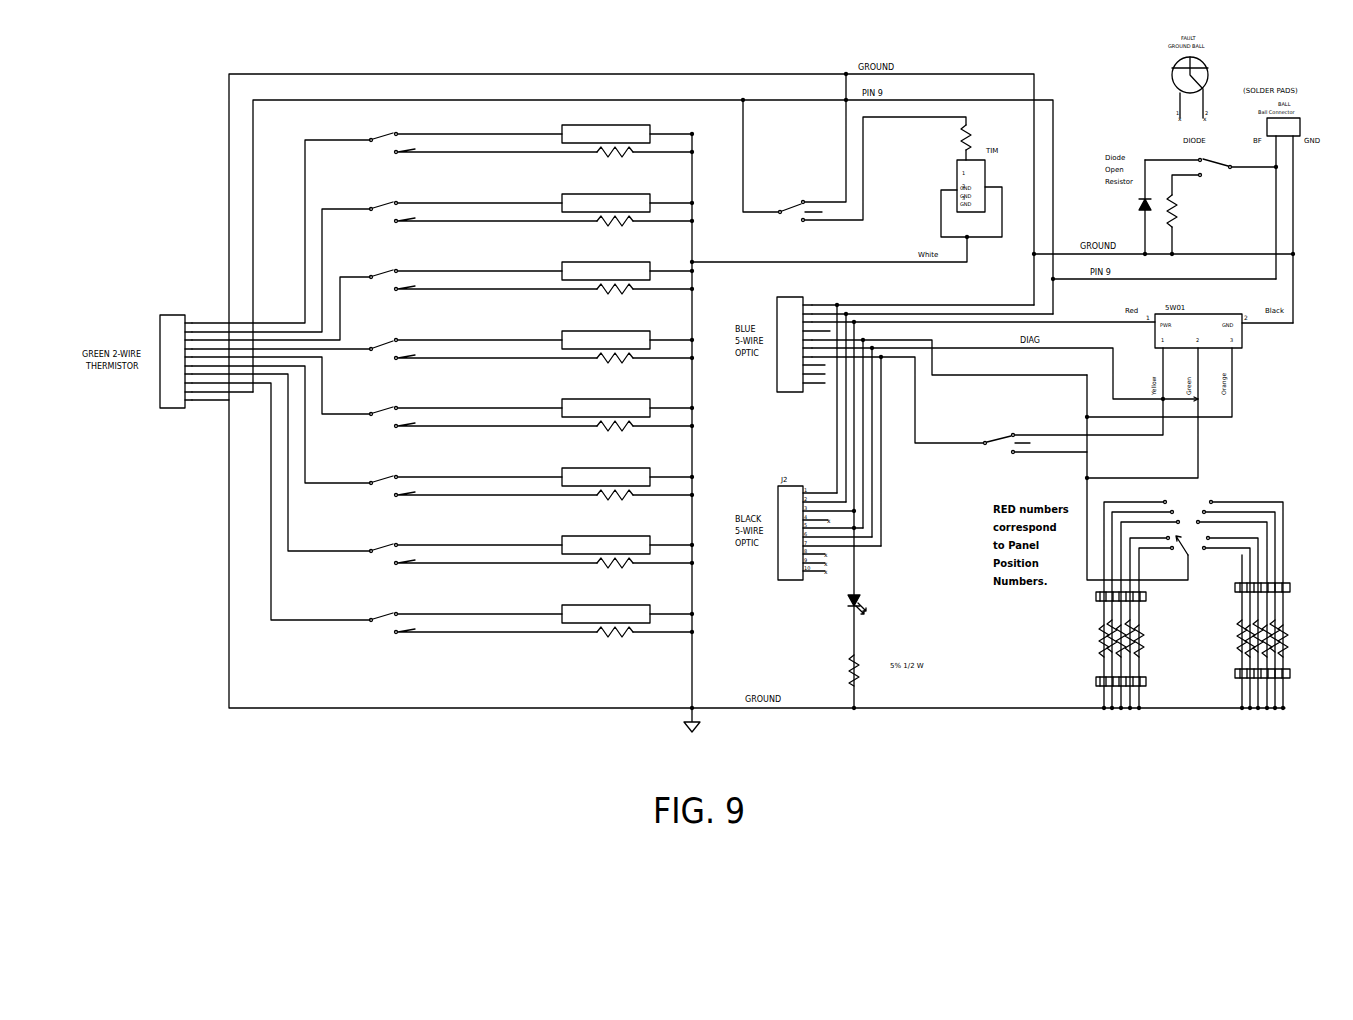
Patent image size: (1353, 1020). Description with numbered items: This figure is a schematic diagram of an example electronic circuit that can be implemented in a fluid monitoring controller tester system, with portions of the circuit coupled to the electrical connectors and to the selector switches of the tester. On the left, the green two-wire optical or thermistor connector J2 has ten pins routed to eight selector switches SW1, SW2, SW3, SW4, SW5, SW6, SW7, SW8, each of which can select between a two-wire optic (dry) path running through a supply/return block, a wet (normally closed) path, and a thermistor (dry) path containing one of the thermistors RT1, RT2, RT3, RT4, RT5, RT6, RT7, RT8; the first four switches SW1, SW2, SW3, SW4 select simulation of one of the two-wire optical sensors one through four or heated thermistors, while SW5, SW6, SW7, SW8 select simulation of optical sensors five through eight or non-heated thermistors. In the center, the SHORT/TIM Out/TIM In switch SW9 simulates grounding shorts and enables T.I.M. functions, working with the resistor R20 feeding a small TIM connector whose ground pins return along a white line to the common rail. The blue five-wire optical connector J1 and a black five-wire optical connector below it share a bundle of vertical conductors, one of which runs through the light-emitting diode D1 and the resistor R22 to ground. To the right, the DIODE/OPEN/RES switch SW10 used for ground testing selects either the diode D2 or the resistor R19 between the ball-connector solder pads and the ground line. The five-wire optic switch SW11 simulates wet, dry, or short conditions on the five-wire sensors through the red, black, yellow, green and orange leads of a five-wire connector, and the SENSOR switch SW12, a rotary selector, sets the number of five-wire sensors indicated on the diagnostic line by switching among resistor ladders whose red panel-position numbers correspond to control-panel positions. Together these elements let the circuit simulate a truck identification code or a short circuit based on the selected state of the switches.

The black 5-Wire Optical connector J2 is at (176, 356).
The blue 5-Wire Optical connector J1 is at (805, 339).
The selector switch 1 SW1 is at (530, 142).
The selector switch 2 SW2 is at (530, 211).
The selector switch 3 SW3 is at (530, 279).
The selector switch 4 SW4 is at (530, 348).
The selector switch 5 SW5 is at (530, 416).
The selector switch 6 SW6 is at (530, 485).
The selector switch 7 SW7 is at (530, 553).
The selector switch 8 SW8 is at (530, 622).
The SHORT/TIM Out/TIM In switch SW9 is at (854, 148).
The DIODE/OPEN/RES switch SW10 is at (1210, 177).
The 5-Wire Optic switch SW11 is at (1027, 431).
The SENSOR switch SW12 is at (1193, 597).
The thermistor RT1 is at (610, 158).
The thermistor RT2 is at (610, 227).
The thermistor RT3 is at (610, 295).
The thermistor RT4 is at (610, 364).
The thermistor RT5 is at (610, 432).
The thermistor RT6 is at (610, 501).
The thermistor RT7 is at (610, 569).
The thermistor RT8 is at (610, 638).
The resistor R19 is at (1181, 224).
The resistor R20 is at (968, 136).
The resistor R22 is at (864, 670).
The diode D1 is at (847, 604).
The diode D2 is at (1137, 207).